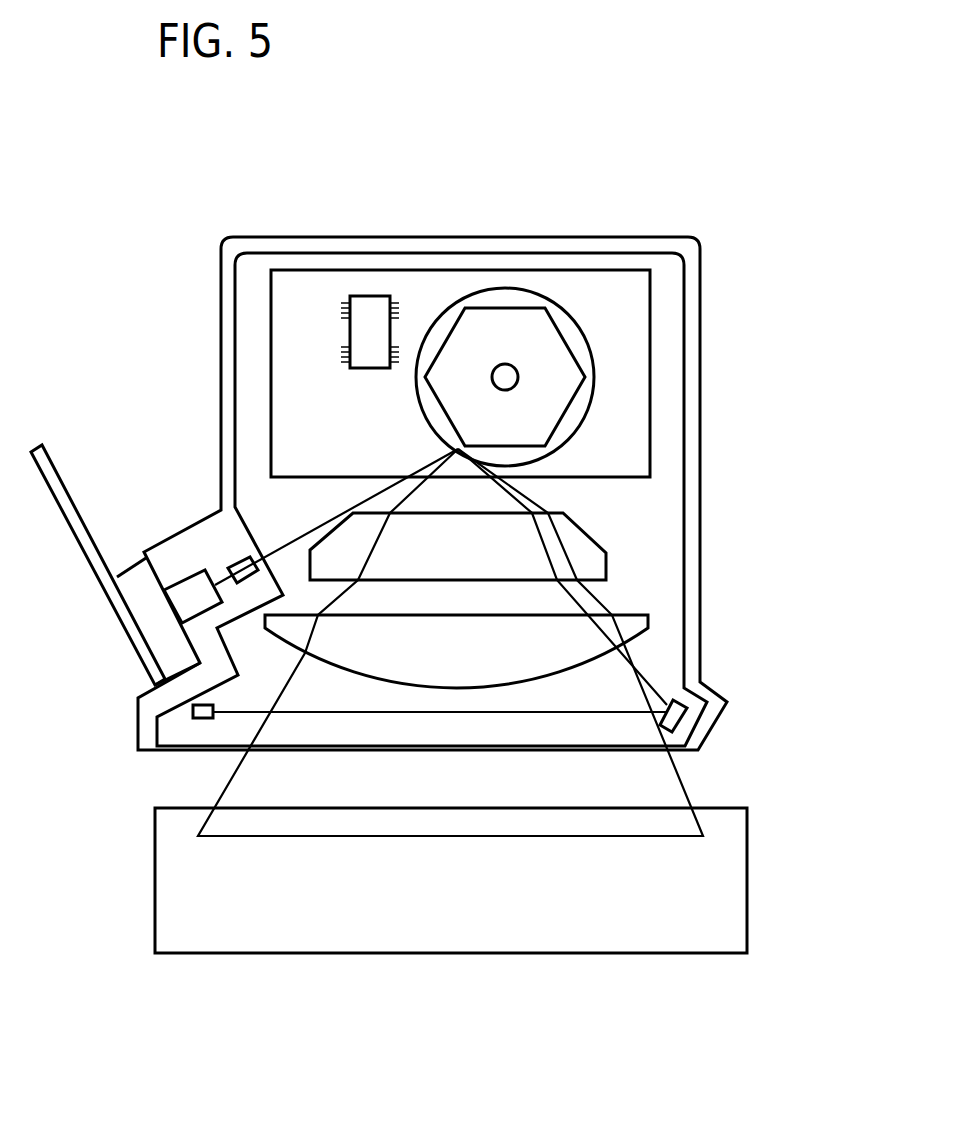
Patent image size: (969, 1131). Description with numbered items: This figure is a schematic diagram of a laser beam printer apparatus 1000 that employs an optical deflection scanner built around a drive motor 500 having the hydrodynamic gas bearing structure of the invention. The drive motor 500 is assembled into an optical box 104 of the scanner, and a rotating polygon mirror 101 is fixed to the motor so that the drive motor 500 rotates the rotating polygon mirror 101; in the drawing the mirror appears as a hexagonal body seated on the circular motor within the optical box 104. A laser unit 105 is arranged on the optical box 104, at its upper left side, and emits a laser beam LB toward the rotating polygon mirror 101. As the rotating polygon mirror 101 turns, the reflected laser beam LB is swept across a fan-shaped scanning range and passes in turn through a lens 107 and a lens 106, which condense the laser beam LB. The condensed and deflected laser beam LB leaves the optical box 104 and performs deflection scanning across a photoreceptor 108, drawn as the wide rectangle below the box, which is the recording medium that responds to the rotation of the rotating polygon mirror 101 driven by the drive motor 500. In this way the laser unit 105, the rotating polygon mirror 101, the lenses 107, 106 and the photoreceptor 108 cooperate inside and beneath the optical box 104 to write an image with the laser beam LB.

The optical scanning device 1000 is at (207, 337).
The optical box 104 is at (548, 243).
The drive motor 500 is at (566, 338).
The rotating polygon mirror 101 is at (562, 387).
The lens 107 is at (593, 562).
The lens 106 is at (640, 627).
The laser unit 105 is at (152, 627).
The photoreceptor 108 is at (747, 890).
The laser beam LB is at (677, 782).